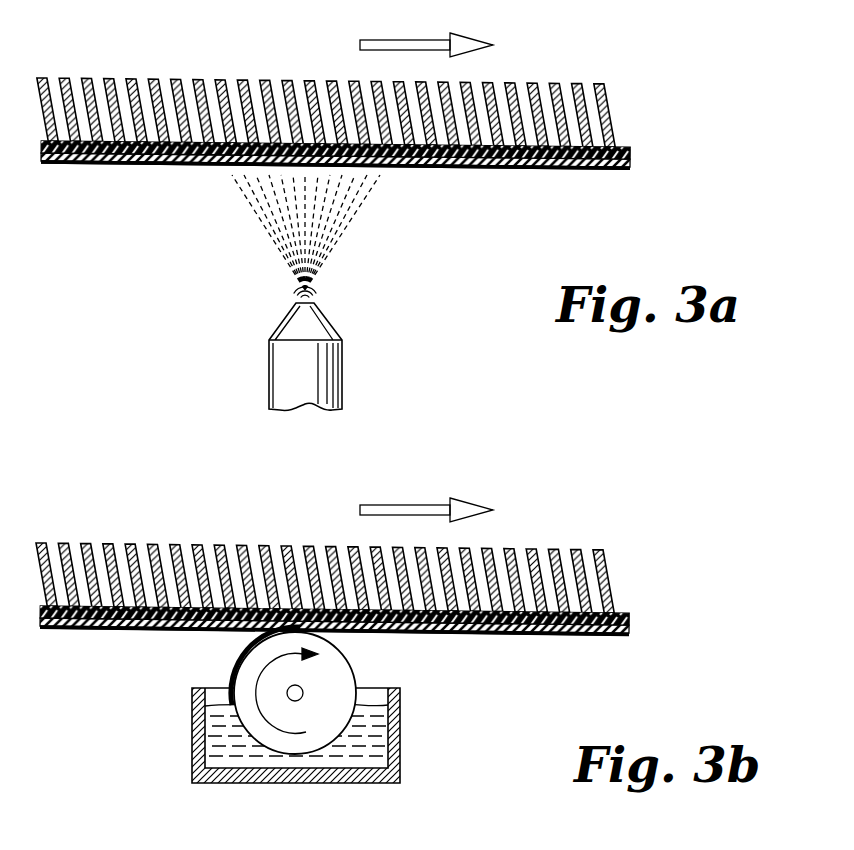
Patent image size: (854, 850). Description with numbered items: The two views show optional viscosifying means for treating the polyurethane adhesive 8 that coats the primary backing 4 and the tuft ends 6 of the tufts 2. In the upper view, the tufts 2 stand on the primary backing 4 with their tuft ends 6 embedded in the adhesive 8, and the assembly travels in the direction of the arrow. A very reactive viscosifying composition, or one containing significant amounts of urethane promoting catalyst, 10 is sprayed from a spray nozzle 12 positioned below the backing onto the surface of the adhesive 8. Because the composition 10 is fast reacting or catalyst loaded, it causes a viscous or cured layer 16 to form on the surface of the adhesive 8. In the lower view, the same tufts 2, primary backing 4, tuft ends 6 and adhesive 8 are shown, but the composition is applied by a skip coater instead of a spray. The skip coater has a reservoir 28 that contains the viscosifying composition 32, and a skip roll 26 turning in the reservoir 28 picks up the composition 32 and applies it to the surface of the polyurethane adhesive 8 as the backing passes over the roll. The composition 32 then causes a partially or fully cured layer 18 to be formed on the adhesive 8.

In FIG. 3A, the tufts 2 is at (285, 78).
In FIG. 3B, the tufts 2 is at (314, 542).
In FIG. 3A, the primary backing 4 is at (632, 150).
In FIG. 3B, the primary backing 4 is at (651, 583).
In FIG. 3A, the tuft ends 6 is at (101, 163).
In FIG. 3B, the tuft ends 6 is at (334, 655).
In FIG. 3A, the adhesive 8 is at (178, 163).
In FIG. 3B, the adhesive 8 is at (334, 661).
In FIG. 3A, the viscosifying composition 10 is at (238, 229).
In FIG. 3A, the spray nozzle 12 is at (342, 355).
In FIG. 3A, the viscous or cured layer 16 is at (632, 168).
In FIG. 3B, the partially or fully cured layer 18 is at (380, 648).
In FIG. 3B, the skip roll 26 is at (262, 722).
In FIG. 3B, the reservoir 28 is at (400, 728).
In FIG. 3B, the viscosifying composition 32 is at (400, 748).